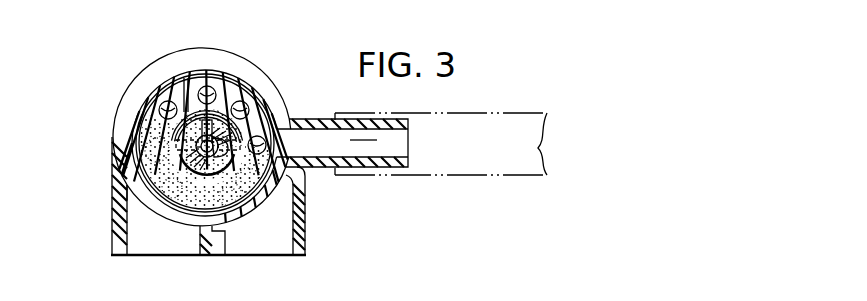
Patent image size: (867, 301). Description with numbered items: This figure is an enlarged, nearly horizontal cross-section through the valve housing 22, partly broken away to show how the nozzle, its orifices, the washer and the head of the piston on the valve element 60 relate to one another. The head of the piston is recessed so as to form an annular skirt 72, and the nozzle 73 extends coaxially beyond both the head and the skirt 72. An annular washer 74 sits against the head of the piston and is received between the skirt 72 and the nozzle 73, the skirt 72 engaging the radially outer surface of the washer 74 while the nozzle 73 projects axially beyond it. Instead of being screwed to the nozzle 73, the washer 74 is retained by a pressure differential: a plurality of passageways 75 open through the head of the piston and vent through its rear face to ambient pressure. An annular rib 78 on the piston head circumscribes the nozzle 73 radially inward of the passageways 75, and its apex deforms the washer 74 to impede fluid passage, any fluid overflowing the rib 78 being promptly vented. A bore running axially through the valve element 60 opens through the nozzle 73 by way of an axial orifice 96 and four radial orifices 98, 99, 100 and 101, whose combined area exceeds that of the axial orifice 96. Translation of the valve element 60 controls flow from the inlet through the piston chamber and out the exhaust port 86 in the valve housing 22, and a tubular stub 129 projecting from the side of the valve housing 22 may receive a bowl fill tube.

The valve housing 22 is at (132, 82).
The annular rib 78 is at (186, 95).
The radial orifice 99 is at (187, 78).
The passageways 75 is at (204, 116).
The valve element 60 is at (256, 95).
The axial orifice 96 is at (268, 127).
The radial orifice 100 is at (266, 147).
The radial orifice 98 is at (136, 161).
The annular washer 74 is at (152, 172).
The nozzle 73 is at (195, 176).
The radial orifice 101 is at (241, 220).
The exhaust port 86 is at (182, 244).
The annular skirt 72 is at (222, 232).
The tubular stub 129 is at (373, 170).